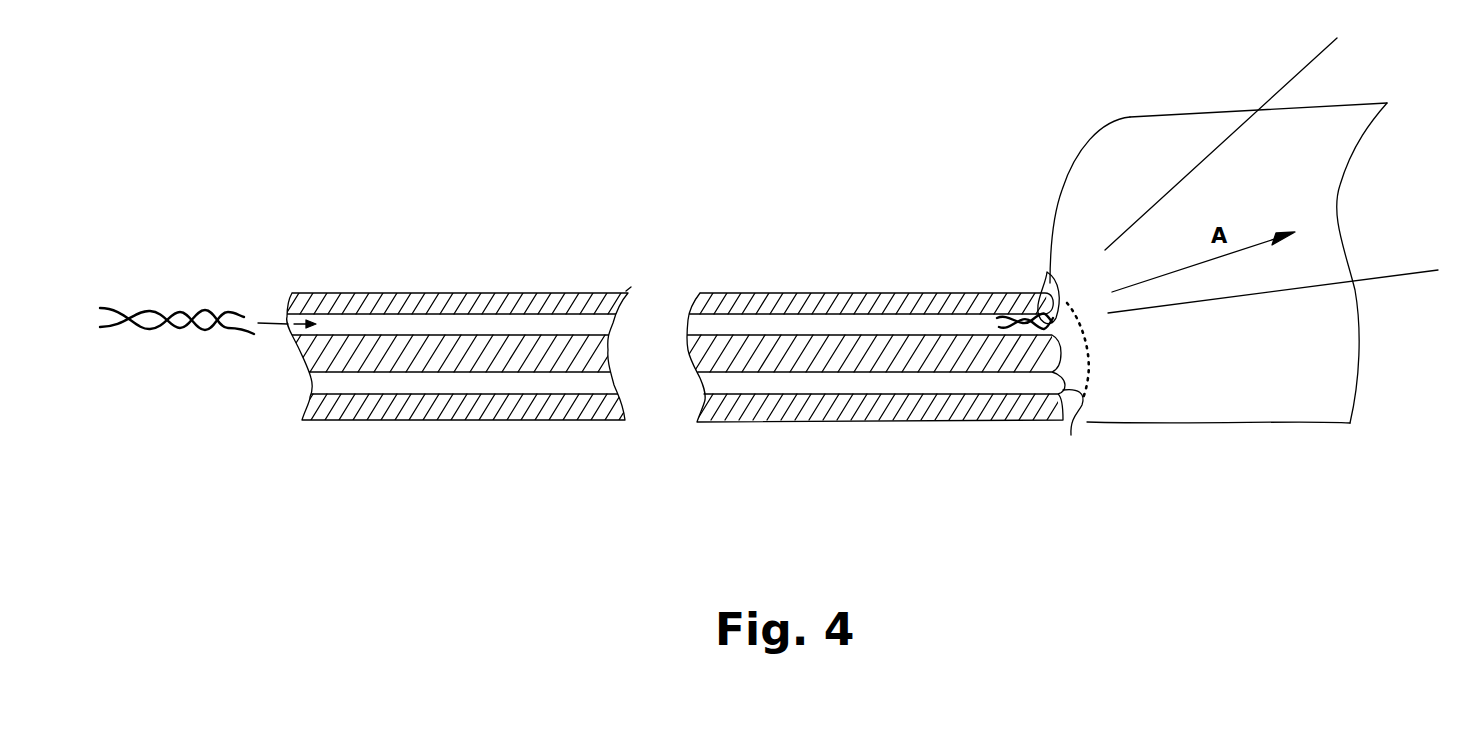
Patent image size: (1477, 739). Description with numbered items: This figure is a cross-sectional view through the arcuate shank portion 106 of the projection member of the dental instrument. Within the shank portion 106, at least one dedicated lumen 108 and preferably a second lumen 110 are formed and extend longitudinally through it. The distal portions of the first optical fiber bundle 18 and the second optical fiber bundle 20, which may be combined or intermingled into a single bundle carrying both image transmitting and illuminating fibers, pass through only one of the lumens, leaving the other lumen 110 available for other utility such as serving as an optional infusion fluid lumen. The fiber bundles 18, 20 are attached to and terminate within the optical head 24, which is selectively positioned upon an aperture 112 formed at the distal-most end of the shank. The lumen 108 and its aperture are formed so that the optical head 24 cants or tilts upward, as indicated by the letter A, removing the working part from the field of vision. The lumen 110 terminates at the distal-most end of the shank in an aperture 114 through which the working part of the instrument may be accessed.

The first optical fiber bundle 18 is at (112, 305).
The second optical fiber bundle 20 is at (113, 330).
The optical head 24 is at (1067, 305).
The arcuate shank portion 106 is at (462, 292).
The lumen 108 is at (557, 323).
The lumen 110 is at (497, 386).
The aperture 112 is at (1047, 272).
The aperture 114 is at (1071, 435).